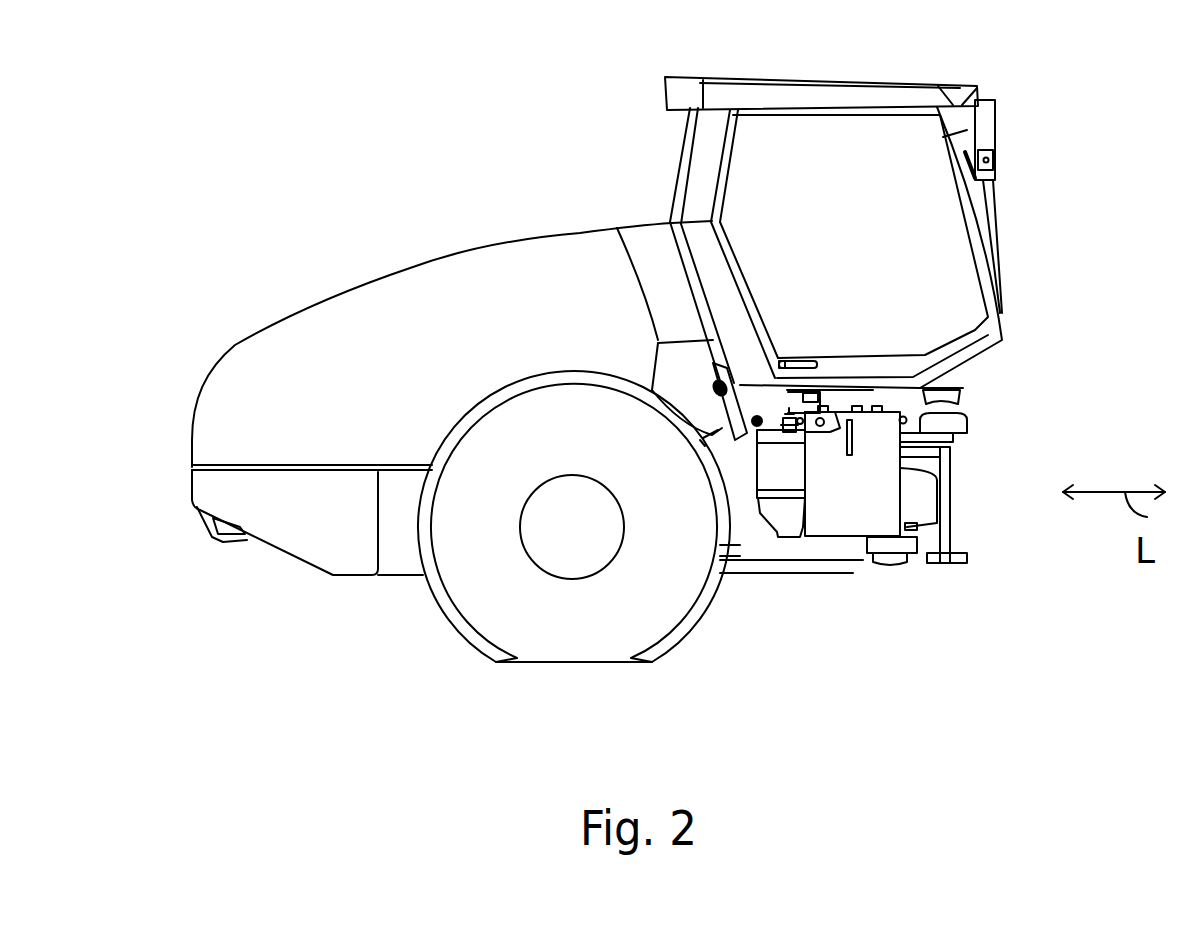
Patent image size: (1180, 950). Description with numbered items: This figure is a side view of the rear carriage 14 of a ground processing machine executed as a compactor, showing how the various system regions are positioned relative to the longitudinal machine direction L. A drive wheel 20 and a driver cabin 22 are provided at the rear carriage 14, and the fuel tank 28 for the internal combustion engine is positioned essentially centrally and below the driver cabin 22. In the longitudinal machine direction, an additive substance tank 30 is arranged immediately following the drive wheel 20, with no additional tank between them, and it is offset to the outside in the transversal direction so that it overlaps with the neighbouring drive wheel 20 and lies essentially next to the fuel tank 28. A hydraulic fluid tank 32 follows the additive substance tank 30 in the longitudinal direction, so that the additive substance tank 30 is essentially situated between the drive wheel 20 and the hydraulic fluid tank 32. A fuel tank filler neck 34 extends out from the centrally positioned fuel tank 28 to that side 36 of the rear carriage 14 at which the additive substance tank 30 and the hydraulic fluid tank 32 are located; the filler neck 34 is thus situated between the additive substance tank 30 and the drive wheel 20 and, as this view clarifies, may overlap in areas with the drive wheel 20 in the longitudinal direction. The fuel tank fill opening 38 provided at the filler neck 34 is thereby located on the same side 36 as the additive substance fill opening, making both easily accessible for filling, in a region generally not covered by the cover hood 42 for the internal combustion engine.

The rear carriage 14 is at (251, 121).
The drive wheel 20 is at (442, 607).
The driver cabin 22 is at (907, 78).
The fuel tank 28 is at (743, 465).
The additive substance tank 30 is at (783, 510).
The hydraulic fluid tank 32 is at (885, 469).
The fuel tank filler neck 34 is at (720, 403).
The side of the rear carriage 36 is at (718, 632).
The fuel tank fill opening 38 is at (718, 383).
The cover hood 42 is at (325, 305).